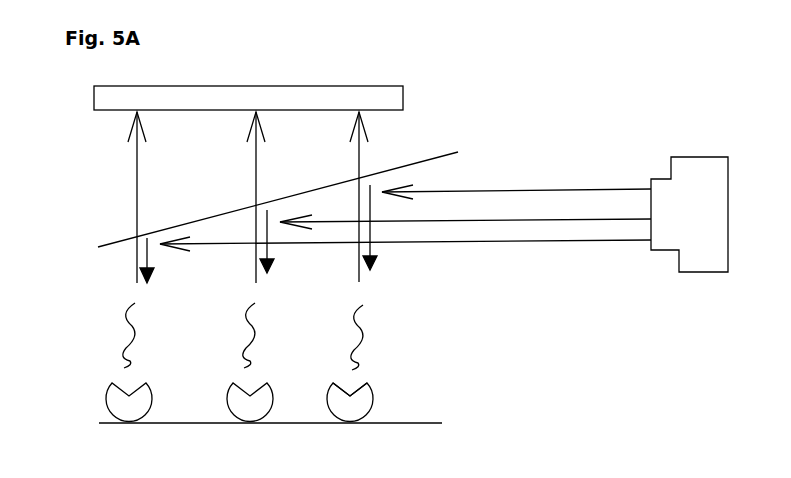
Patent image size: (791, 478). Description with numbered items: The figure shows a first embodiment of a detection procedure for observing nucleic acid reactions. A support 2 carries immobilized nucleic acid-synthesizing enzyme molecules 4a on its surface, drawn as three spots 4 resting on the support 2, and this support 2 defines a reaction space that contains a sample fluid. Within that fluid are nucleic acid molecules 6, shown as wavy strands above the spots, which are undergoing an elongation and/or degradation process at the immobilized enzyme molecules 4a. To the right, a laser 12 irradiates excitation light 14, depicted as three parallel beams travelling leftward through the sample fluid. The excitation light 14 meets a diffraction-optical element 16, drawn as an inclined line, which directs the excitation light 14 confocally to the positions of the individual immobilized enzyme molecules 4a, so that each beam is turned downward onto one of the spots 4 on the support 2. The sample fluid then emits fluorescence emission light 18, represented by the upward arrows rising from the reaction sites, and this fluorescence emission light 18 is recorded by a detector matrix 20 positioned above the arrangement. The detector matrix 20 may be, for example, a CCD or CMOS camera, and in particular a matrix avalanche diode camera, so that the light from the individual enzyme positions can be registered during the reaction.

The support 2 is at (415, 432).
The sample spots / receptors 4 is at (385, 396).
The immobilized nucleic acid-synthesizing enzyme molecules 4a is at (328, 397).
The nucleic acid molecules 6 is at (377, 343).
The laser 12 is at (703, 273).
The excitation light 14 is at (552, 247).
The diffraction-optical element 16 is at (110, 255).
The fluorescence emission light 18 is at (133, 158).
The detector matrix 20 is at (86, 95).